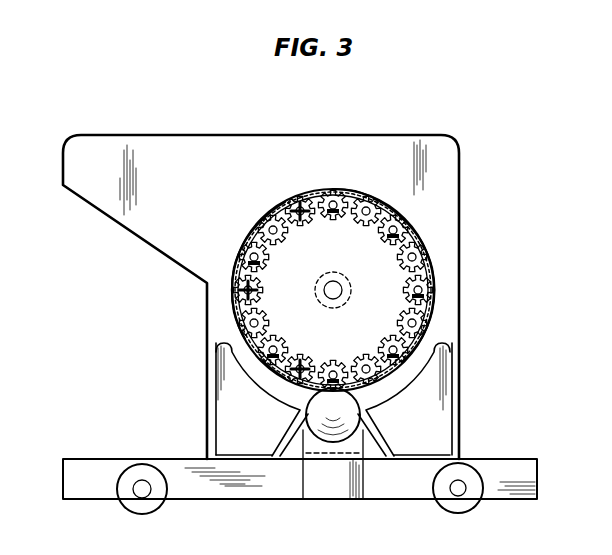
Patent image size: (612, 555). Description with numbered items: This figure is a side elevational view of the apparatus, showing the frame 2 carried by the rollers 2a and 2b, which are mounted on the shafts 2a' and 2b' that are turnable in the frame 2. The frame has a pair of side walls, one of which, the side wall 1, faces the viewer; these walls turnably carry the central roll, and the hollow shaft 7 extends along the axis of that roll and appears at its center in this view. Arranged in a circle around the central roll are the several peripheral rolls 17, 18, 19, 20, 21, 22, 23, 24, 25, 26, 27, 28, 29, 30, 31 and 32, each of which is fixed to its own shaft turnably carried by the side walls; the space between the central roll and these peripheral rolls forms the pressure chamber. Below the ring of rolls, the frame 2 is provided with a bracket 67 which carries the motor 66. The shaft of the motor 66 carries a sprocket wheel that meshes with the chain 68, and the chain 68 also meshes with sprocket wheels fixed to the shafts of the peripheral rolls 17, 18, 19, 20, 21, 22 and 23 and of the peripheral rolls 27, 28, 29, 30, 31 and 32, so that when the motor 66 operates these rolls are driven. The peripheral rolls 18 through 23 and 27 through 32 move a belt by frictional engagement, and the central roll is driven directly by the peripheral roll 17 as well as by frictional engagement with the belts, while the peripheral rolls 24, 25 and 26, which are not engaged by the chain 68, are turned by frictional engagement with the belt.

The side wall 1 is at (455, 162).
The frame 2 is at (264, 503).
The roller 2a is at (466, 496).
The shaft 2a' is at (476, 466).
The roller 2b is at (142, 503).
The shaft 2b' is at (144, 467).
The hollow shaft 7 is at (342, 285).
The peripheral roll 17 is at (331, 198).
The peripheral roll 18 is at (388, 195).
The peripheral roll 19 is at (416, 219).
The peripheral roll 20 is at (432, 244).
The peripheral roll 21 is at (440, 268).
The peripheral roll 22 is at (440, 318).
The peripheral roll 23 is at (428, 374).
The peripheral roll 24 is at (412, 397).
The peripheral roll 25 is at (324, 334).
The peripheral roll 26 is at (280, 406).
The peripheral roll 27 is at (281, 341).
The peripheral roll 28 is at (234, 325).
The peripheral roll 29 is at (254, 393).
The peripheral roll 30 is at (239, 253).
The peripheral roll 31 is at (247, 227).
The peripheral roll 32 is at (279, 199).
The motor 66 is at (359, 438).
The bracket 67 is at (290, 446).
The chain 68 is at (309, 193).